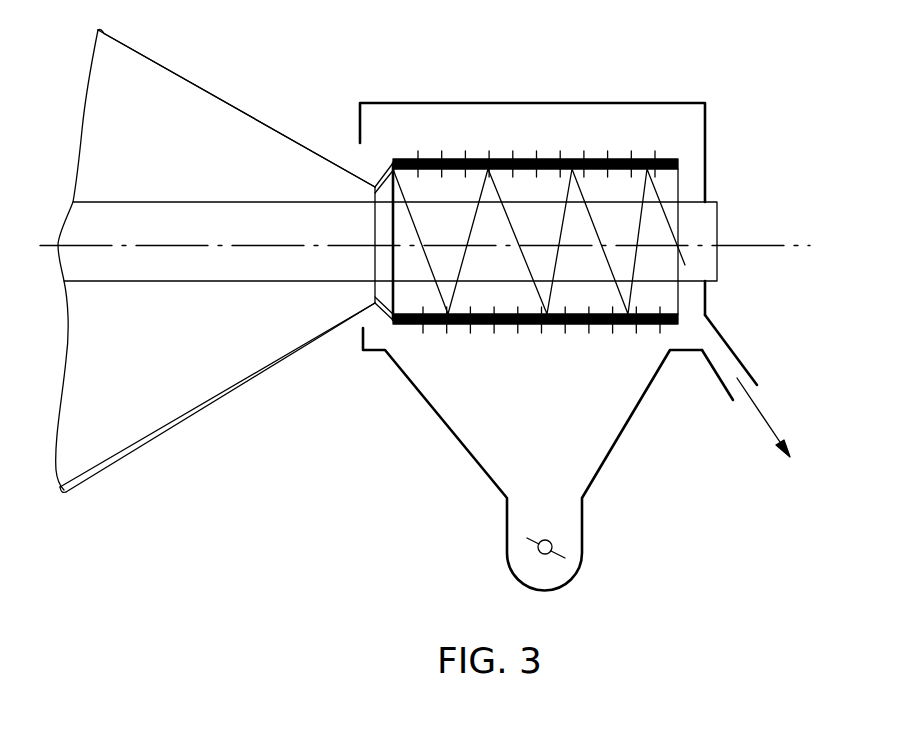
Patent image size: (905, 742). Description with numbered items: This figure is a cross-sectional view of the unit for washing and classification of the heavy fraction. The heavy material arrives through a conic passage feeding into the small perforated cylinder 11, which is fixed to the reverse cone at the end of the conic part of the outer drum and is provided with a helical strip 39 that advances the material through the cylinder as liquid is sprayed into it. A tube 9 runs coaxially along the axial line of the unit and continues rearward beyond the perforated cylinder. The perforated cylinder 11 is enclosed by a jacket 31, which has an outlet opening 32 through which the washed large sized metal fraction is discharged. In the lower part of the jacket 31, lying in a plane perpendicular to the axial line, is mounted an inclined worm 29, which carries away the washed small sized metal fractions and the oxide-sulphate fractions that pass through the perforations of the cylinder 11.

The tube 9 is at (298, 201).
The small perforated cylinder 11 is at (630, 160).
The inclined worm 29 is at (528, 548).
The jacket 31 is at (708, 185).
The outlet opening 32 is at (730, 360).
The helical strip 39 is at (507, 217).